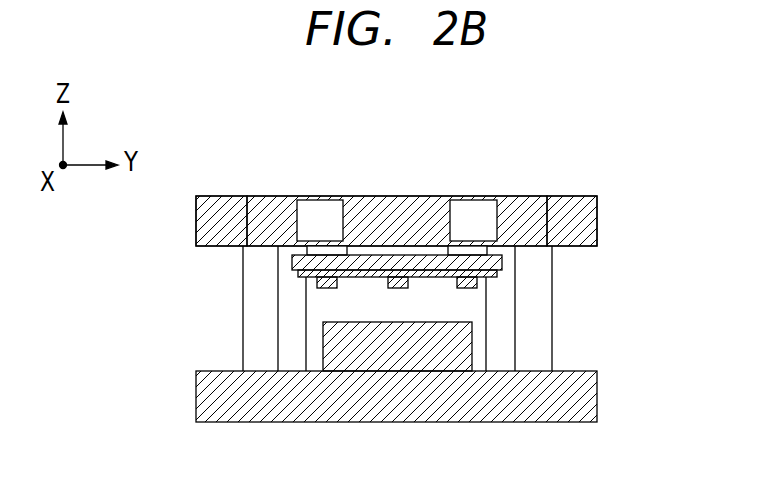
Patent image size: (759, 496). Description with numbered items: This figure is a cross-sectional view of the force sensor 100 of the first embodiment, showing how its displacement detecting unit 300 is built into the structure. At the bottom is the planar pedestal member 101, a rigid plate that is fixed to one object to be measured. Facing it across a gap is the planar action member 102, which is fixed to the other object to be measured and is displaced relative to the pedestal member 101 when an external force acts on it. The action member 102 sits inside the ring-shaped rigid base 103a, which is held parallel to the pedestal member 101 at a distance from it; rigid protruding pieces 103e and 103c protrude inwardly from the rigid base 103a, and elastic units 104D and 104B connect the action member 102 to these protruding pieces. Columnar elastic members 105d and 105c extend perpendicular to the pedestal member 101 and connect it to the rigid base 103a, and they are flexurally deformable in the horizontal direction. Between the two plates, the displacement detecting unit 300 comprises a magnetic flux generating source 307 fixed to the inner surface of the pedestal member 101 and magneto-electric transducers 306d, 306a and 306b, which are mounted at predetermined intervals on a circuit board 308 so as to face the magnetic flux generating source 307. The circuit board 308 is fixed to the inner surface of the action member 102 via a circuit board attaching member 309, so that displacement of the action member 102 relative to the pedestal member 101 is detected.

The force sensor 100 is at (583, 128).
The pedestal member 101 is at (589, 404).
The action member 102 is at (398, 196).
The rigid base 103a is at (590, 214).
The rigid protruding piece 103c is at (521, 196).
The rigid protruding piece 103e is at (271, 196).
The elastic unit 104B is at (468, 196).
The elastic unit 104D is at (318, 196).
The columnar elastic member 105c is at (545, 350).
The columnar elastic member 105d is at (254, 290).
The displacement detecting unit 300 is at (305, 330).
The magneto-electric transducer 306a is at (403, 288).
The magneto-electric transducer 306b is at (470, 288).
The magneto-electric transducer 306d is at (328, 283).
The magnetic flux generating source 307 is at (330, 348).
The circuit board 308 is at (497, 274).
The circuit board attaching member 309 is at (500, 258).